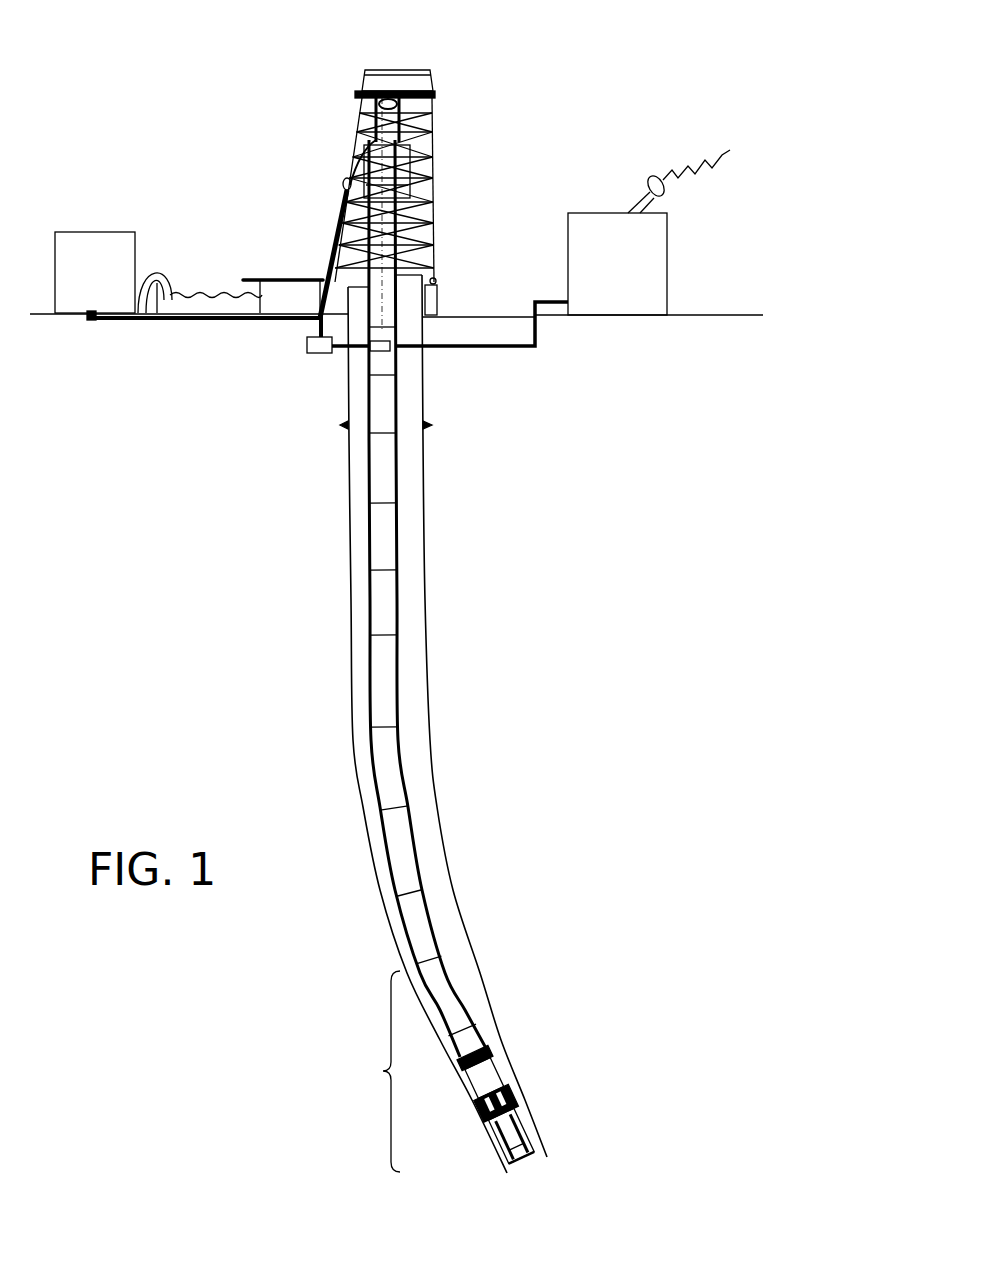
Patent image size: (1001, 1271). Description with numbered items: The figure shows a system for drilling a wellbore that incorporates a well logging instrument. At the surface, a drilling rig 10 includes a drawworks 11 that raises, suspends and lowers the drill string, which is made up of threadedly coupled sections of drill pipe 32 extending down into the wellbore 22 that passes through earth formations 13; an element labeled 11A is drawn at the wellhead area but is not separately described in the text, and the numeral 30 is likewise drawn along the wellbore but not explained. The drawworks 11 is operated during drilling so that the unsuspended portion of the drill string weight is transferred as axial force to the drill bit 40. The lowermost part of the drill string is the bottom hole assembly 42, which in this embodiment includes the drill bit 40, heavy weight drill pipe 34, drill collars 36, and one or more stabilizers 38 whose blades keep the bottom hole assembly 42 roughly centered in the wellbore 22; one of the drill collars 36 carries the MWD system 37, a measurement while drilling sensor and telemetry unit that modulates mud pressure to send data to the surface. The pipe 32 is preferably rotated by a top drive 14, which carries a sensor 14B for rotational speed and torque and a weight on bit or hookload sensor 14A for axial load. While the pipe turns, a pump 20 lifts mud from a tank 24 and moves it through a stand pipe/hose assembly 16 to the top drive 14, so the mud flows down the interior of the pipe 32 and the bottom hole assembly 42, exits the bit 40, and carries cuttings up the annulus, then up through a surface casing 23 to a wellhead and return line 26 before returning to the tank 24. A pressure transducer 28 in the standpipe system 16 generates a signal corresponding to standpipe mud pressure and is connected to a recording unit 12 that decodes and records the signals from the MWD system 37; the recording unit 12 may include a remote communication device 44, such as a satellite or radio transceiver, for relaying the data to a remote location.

The drilling rig 10 is at (433, 128).
The drawworks 11 is at (437, 303).
The wellhead sensor 11A is at (436, 279).
The recording unit 12 is at (591, 220).
The earth formations 13 is at (543, 664).
The top drive 14 is at (387, 168).
The weight on bit sensor 14A is at (358, 93).
The sensor 14B is at (403, 185).
The stand pipe/hose assembly 16 is at (343, 196).
The pump 20 is at (92, 232).
The wellbore 22 is at (427, 572).
The surface casing 23 is at (347, 403).
The tank 24 is at (257, 318).
The return line 26 is at (285, 278).
The pressure transducer 28 is at (310, 357).
The wellbore 30 is at (357, 562).
The drill pipe 32 is at (397, 402).
The heavy weight drill pipe 34 is at (452, 1000).
The drill collars 36 is at (508, 1090).
The MWD system 37 is at (500, 1072).
The stabilizers 38 is at (527, 1103).
The drill bit 40 is at (530, 1153).
The bottom hole assembly 42 is at (369, 1071).
The remote communication device 44 is at (657, 167).